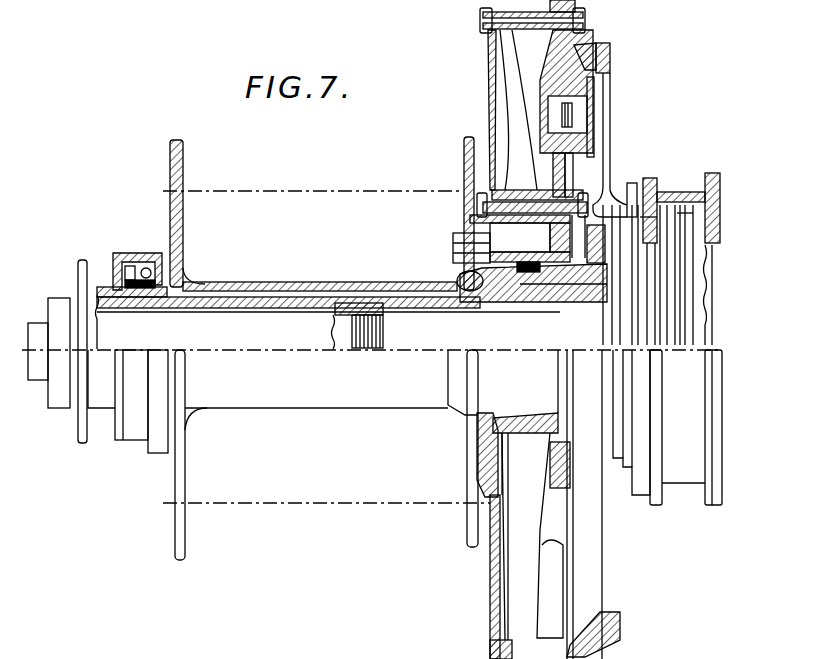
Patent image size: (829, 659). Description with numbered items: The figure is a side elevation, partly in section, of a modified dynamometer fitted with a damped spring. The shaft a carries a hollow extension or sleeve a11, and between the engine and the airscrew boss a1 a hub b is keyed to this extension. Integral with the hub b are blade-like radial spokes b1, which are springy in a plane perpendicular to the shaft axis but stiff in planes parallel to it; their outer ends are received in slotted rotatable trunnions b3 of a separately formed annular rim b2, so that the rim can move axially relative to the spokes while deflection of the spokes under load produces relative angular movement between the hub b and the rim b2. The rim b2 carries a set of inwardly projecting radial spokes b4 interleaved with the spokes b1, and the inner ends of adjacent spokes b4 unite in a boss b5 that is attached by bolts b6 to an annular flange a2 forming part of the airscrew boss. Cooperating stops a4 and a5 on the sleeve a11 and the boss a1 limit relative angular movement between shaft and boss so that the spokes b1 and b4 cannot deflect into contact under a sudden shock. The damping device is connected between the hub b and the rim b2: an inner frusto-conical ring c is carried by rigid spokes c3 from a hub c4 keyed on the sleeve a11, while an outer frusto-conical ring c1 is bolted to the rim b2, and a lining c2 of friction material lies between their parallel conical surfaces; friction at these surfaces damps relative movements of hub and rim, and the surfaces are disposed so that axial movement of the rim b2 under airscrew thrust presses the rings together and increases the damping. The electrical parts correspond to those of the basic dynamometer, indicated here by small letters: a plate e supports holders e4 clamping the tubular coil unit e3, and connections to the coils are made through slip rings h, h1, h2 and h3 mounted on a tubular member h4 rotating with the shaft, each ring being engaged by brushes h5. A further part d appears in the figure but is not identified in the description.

The shaft a is at (380, 388).
The airscrew boss a1 is at (282, 286).
The annular flange a2 is at (466, 220).
The stop a4 is at (470, 292).
The stop a5 is at (458, 278).
The hollow extension a11 is at (533, 292).
The hub b is at (512, 273).
The blade-like radial spokes b1 is at (513, 240).
The annular rim b2 is at (520, 0).
The slotted rotatable trunnions b3 is at (490, 642).
The inwardly projecting radial spokes b4 is at (527, 48).
The boss b5 is at (530, 195).
The bolts b6 is at (507, 208).
The inner frusto-conical ring c is at (611, 50).
The outer frusto-conical ring c1 is at (583, 42).
The friction lining c2 is at (605, 44).
The rigid spokes c3 is at (617, 173).
The hub c4 is at (560, 296).
The central stem d is at (568, 165).
The plate e is at (563, 60).
The tubular coil unit e3 is at (580, 128).
The holders e4 is at (594, 92).
The slip ring h is at (663, 193).
The slip ring h1 is at (647, 238).
The slip ring h2 is at (660, 260).
The slip ring h3 is at (678, 283).
The tubular member h4 is at (688, 320).
The brushes h5 is at (655, 197).